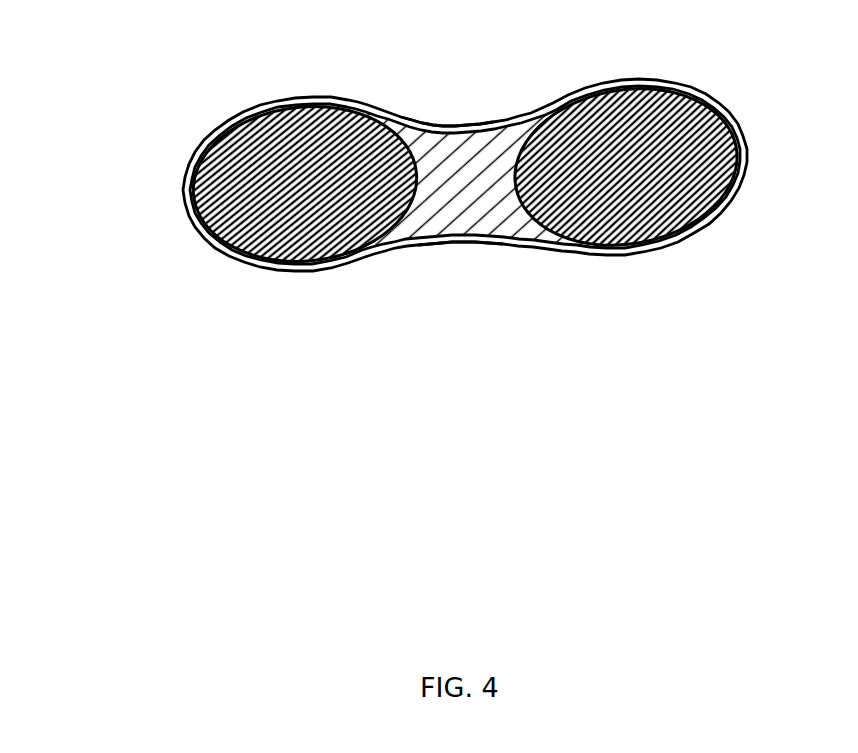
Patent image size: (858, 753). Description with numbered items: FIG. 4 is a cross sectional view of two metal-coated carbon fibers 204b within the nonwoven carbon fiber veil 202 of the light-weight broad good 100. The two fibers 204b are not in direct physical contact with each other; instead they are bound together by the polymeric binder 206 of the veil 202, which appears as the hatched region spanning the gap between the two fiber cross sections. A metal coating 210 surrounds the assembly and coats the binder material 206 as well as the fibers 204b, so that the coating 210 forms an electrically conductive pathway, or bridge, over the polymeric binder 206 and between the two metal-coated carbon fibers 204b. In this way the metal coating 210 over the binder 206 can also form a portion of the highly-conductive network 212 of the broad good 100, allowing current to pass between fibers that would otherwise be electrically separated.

The broad good 100 is at (488, 232).
The nonwoven carbon fiber veil 202 is at (704, 291).
The metal-coated carbon fibers 204b is at (288, 130).
The polymeric binder 206 is at (477, 163).
The metal coating 210 is at (443, 133).
The highly-conductive network 212 is at (527, 355).